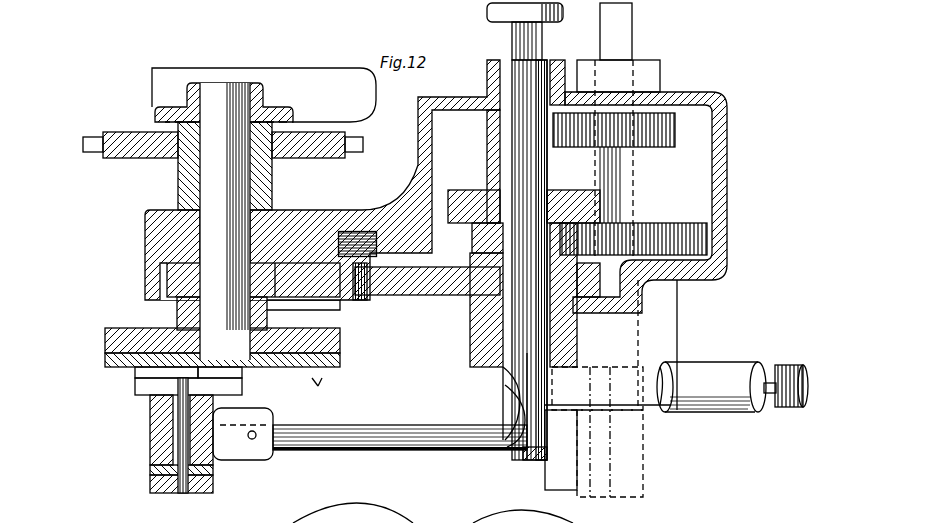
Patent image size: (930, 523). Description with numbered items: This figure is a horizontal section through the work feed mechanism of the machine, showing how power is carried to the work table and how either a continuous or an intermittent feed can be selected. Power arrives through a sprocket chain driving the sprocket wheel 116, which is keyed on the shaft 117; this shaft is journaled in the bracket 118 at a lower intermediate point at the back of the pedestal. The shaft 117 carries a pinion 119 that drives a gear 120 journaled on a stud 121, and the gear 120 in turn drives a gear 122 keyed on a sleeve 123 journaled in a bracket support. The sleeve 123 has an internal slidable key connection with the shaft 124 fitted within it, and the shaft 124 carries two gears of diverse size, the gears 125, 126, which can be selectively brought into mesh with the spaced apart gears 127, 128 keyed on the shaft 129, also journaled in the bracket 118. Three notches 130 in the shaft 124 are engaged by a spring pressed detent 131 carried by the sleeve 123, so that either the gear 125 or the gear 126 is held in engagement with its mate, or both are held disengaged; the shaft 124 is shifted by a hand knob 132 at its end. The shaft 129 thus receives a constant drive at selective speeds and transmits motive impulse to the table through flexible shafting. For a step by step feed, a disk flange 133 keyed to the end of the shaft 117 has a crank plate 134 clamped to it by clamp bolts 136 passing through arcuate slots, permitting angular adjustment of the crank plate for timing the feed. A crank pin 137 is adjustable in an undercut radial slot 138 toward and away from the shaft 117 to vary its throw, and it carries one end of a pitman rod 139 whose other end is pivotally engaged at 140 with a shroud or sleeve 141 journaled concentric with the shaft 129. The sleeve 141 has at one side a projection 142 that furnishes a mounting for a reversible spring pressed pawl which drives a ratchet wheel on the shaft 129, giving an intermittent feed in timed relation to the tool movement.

The sprocket wheel 116 is at (127, 140).
The shaft 117 is at (228, 97).
The bracket 118 is at (160, 222).
The pinion 119 is at (187, 278).
The gear 120 is at (399, 297).
The stud 121 is at (352, 298).
The gear 122 is at (467, 284).
The sleeve 123 is at (493, 352).
The shaft 124 is at (505, 382).
The gear 125 is at (490, 240).
The gear 126 is at (466, 190).
The gear 127 is at (665, 232).
The gear 128 is at (657, 148).
The shaft 129 is at (610, 42).
The notches 130 is at (523, 440).
The spring pressed detent 131 is at (500, 433).
The hand knob 132 is at (548, 22).
The disk flange 133 is at (105, 333).
The crank plate 134 is at (122, 368).
The clamp bolts 136 is at (312, 378).
The crank pin 137 is at (180, 408).
The undercut radial slot 138 is at (160, 385).
The pitman rod 139 is at (313, 438).
The pivotal engagement 140 is at (567, 458).
The shroud or sleeve 141 is at (676, 362).
The projection 142 is at (727, 376).